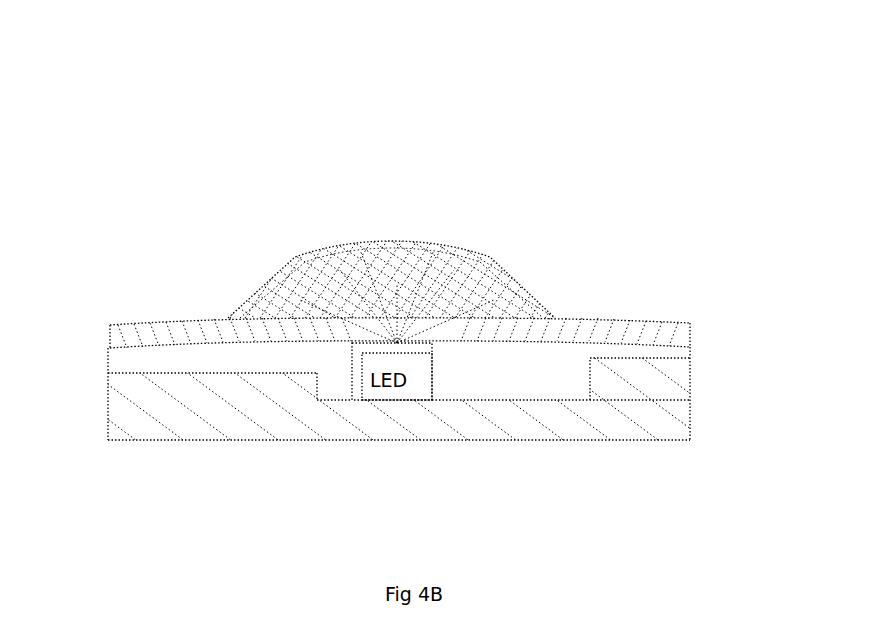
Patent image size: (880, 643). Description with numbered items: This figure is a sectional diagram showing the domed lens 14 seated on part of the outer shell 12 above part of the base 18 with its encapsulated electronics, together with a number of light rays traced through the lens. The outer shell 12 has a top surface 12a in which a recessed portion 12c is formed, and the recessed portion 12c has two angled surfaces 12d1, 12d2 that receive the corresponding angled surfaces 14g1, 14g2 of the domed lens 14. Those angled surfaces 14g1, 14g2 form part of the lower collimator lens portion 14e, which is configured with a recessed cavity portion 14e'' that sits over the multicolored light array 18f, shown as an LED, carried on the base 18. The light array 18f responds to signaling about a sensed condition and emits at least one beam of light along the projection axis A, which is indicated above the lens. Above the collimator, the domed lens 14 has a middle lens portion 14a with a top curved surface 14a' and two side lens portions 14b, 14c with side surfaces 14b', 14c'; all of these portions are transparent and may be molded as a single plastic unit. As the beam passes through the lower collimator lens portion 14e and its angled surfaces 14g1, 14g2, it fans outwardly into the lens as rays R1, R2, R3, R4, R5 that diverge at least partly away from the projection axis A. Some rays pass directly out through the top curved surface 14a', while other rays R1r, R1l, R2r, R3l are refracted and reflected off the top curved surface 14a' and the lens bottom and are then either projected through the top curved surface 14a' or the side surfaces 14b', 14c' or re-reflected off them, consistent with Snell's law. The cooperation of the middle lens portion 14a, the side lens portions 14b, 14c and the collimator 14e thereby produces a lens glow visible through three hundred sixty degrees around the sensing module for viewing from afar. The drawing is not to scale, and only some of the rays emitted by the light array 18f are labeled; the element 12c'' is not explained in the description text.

The projection axis A is at (397, 22).
The outer shell 12 is at (616, 314).
The top surface 12a is at (657, 325).
The recessed portion 12c is at (421, 450).
The cavity bottom 12c'' is at (340, 474).
The angled surface 12d1 is at (449, 345).
The angled surface 12d2 is at (355, 338).
The domed lens 14 is at (502, 248).
The middle lens portion 14a is at (380, 197).
The top curved surface 14a' is at (334, 190).
The side lens portion 14b is at (147, 301).
The side surface 14b' is at (140, 275).
The side lens portion 14c is at (566, 254).
The side surface 14c' is at (612, 223).
The lower collimator lens portion 14e is at (459, 421).
The recessed cavity portion 14e'' is at (383, 421).
The angled surface 14g1 is at (462, 324).
The angled surface 14g2 is at (355, 338).
The base 18 is at (632, 437).
The multicolored light array 18f is at (401, 404).
The ray R1 is at (397, 280).
The light ray R1l is at (240, 308).
The light ray R1r is at (556, 300).
The ray R2 is at (440, 256).
The light ray R2r is at (491, 296).
The ray R3 is at (352, 256).
The light ray R3l is at (305, 298).
The ray R4 is at (434, 318).
The ray R5 is at (358, 316).